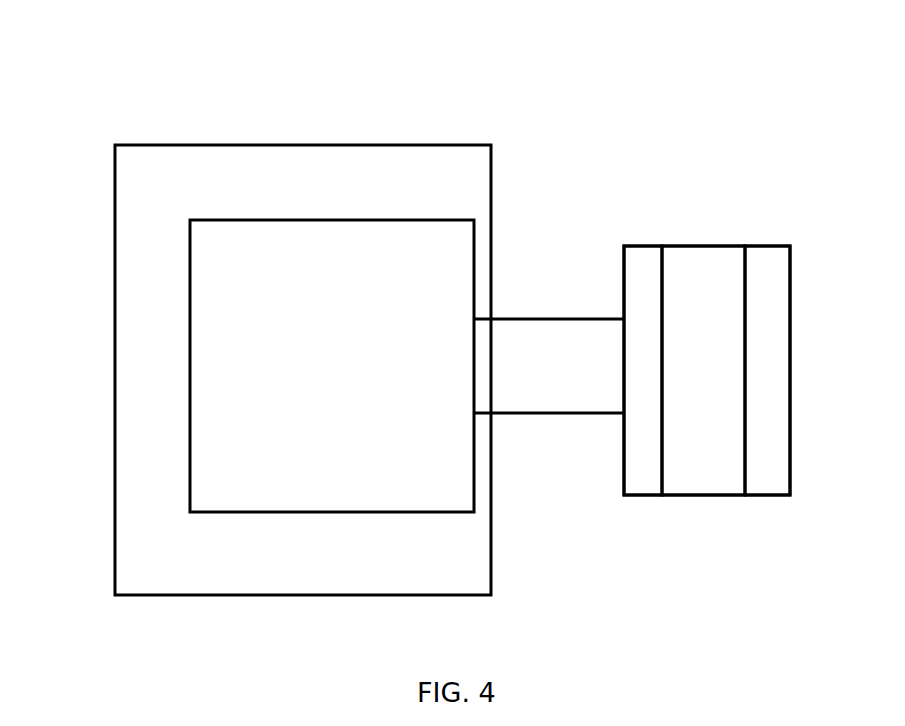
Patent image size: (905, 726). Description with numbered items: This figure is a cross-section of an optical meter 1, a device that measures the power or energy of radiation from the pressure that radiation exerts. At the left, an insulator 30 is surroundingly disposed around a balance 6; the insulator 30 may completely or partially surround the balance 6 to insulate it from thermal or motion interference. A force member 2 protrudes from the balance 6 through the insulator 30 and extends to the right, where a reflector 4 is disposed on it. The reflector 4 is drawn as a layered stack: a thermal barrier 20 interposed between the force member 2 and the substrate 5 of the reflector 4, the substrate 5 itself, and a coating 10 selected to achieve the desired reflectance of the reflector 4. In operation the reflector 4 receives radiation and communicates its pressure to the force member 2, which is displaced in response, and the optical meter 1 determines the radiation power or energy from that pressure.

The optical meter 1 is at (63, 122).
The insulator 30 is at (233, 183).
The balance 6 is at (363, 262).
The force member 2 is at (537, 333).
The reflector 4 is at (707, 376).
The thermal barrier 20 is at (642, 292).
The substrate 5 is at (707, 292).
The coating 10 is at (753, 290).